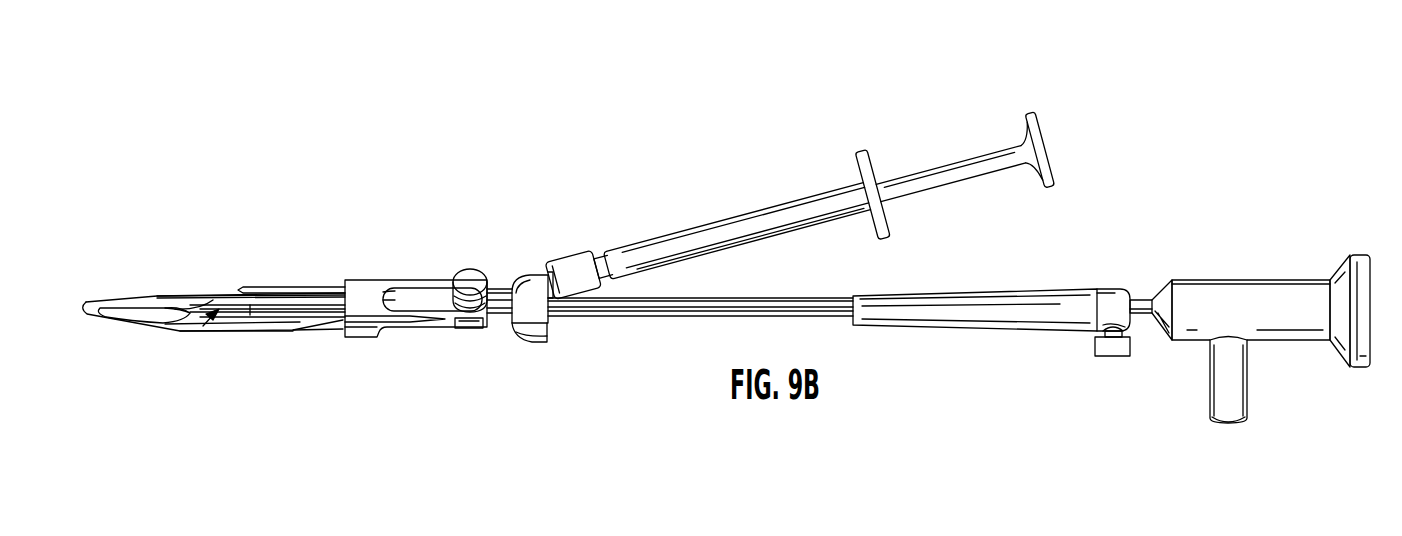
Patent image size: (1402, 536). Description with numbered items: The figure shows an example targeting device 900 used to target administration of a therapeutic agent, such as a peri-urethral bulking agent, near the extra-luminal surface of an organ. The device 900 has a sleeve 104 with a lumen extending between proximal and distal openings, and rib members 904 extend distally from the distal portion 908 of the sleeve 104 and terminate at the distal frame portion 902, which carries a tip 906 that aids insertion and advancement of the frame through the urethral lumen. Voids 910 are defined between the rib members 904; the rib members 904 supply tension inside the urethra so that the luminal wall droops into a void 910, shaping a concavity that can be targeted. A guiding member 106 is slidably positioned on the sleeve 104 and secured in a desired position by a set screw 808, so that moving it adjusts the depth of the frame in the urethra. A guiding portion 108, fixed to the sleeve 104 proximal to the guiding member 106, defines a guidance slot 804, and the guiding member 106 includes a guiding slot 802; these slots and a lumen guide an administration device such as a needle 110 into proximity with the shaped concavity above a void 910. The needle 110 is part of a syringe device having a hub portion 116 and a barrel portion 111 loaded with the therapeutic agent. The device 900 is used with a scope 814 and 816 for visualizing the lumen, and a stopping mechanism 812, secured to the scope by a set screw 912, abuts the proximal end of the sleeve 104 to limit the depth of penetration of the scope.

The targeting device 900 is at (187, 179).
The tip 906 is at (100, 302).
The distal frame portion 902 is at (150, 320).
The rib member 904 is at (208, 295).
The void 910 is at (203, 326).
The scope 816 is at (277, 314).
The needle 110 is at (298, 288).
The guiding member 106 is at (363, 283).
The distal portion of sleeve 908 is at (340, 337).
The guiding slot 802 is at (462, 328).
The set screw 808 is at (467, 283).
The guiding portion 108 is at (533, 290).
The guidance slot 804 is at (545, 341).
The sleeve 104 is at (757, 300).
The hub portion 116 is at (572, 262).
The barrel portion 111 is at (783, 210).
The stopping mechanism 812 is at (1010, 295).
The set screw 912 is at (1097, 345).
The scope 814 is at (1240, 288).